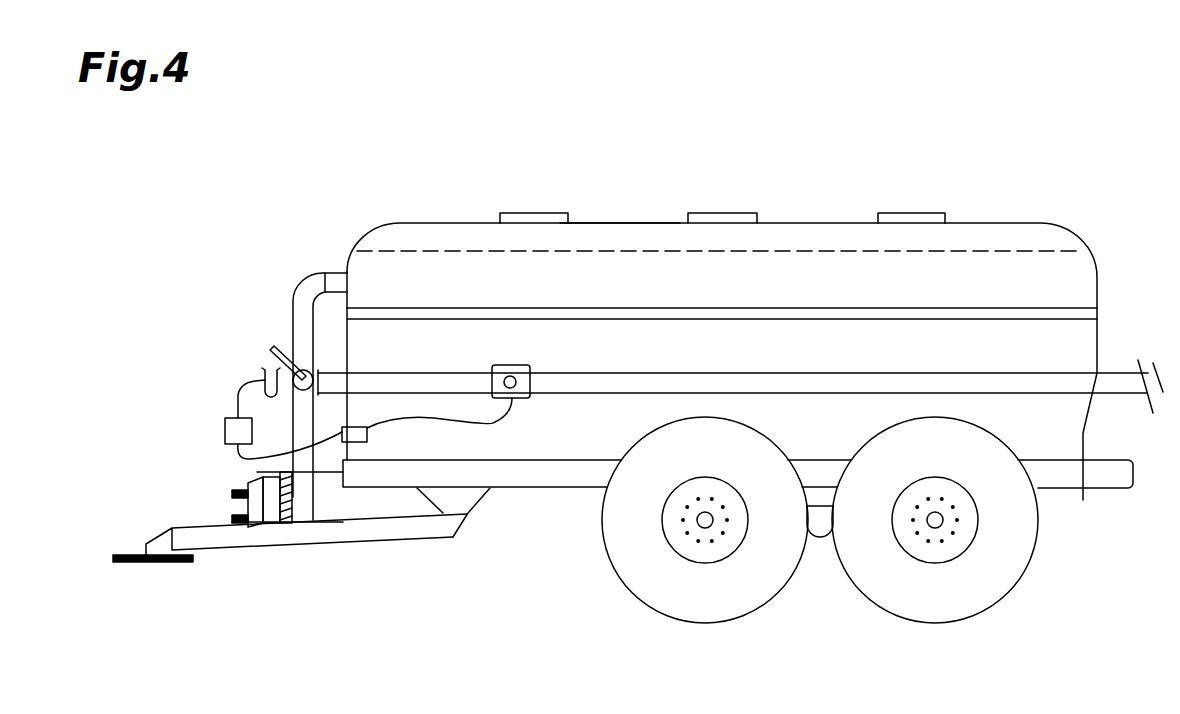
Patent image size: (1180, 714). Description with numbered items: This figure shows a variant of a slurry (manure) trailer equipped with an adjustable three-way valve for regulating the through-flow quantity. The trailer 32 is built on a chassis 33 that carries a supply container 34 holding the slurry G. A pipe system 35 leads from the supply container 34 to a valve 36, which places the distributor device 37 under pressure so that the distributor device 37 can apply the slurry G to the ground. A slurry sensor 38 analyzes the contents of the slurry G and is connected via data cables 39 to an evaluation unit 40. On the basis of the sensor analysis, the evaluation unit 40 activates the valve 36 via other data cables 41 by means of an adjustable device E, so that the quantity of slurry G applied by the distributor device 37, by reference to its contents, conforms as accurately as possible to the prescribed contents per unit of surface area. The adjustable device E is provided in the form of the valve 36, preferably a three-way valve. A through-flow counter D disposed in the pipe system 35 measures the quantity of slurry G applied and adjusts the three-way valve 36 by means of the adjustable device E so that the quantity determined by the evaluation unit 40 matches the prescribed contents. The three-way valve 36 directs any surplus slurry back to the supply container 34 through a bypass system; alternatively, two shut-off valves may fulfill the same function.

The liquid manure tank 32 is at (336, 262).
The chassis 33 is at (560, 477).
The supply container 34 is at (610, 240).
The pipe system 35 is at (372, 375).
The valve 36 is at (300, 362).
The distributor device 37 is at (1145, 365).
The sensor 38 is at (363, 442).
The data cables 39 is at (240, 463).
The evaluation unit 40 is at (225, 432).
The other data cables 41 is at (237, 392).
The through-flow counter D is at (523, 400).
The adjustable device E is at (262, 373).
The slurry G is at (963, 270).